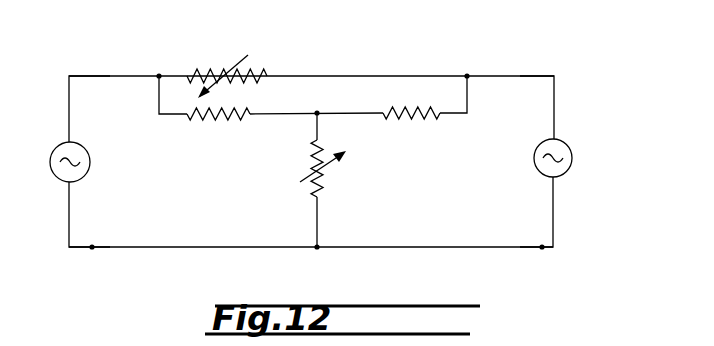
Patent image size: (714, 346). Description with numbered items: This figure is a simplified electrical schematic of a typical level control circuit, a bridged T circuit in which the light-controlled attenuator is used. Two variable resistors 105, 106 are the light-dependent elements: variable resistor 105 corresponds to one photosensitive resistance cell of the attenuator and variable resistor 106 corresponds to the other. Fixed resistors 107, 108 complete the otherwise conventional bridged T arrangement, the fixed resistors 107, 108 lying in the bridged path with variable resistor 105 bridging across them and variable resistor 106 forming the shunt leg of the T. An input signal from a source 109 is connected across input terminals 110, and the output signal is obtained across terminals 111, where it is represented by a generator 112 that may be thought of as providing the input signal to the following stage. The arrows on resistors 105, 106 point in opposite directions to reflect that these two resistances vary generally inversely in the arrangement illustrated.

The variable resistor 105 is at (204, 70).
The variable resistor 106 is at (323, 187).
The fixed resistor 107 is at (219, 119).
The fixed resistor 108 is at (414, 118).
The source 109 is at (88, 168).
The input terminals 110 is at (90, 75).
The terminals 111 is at (537, 74).
The generator 112 is at (570, 166).